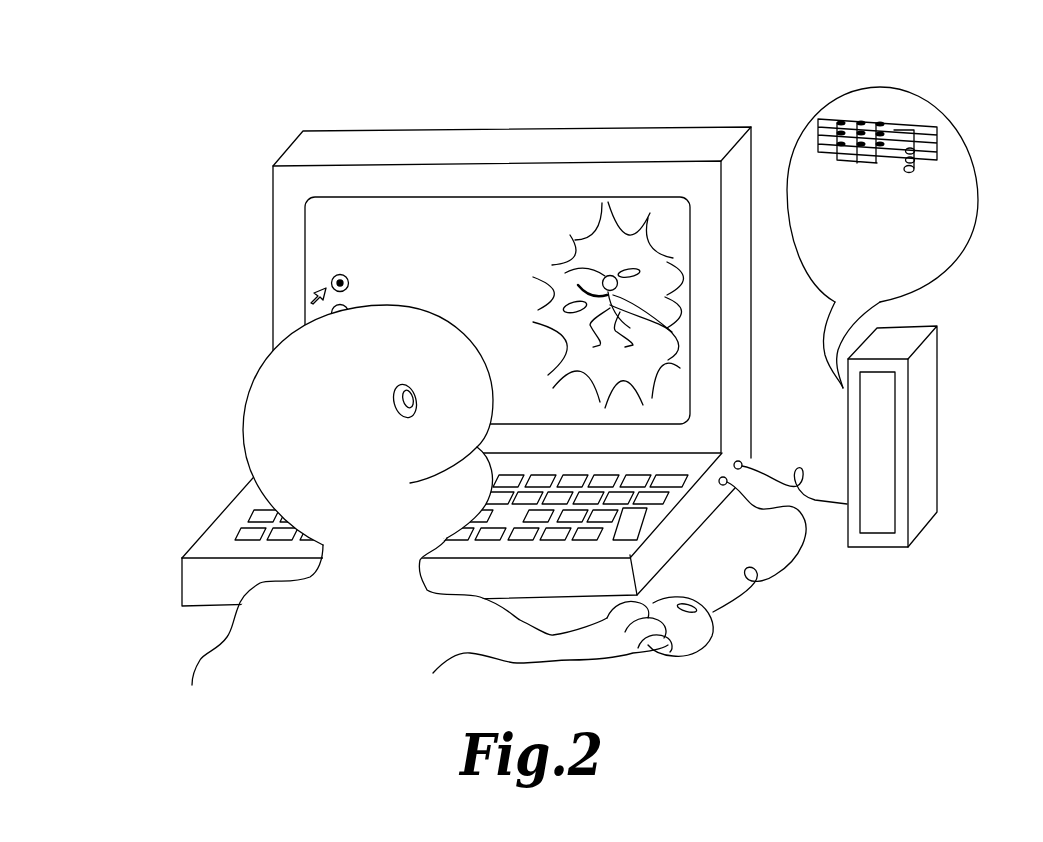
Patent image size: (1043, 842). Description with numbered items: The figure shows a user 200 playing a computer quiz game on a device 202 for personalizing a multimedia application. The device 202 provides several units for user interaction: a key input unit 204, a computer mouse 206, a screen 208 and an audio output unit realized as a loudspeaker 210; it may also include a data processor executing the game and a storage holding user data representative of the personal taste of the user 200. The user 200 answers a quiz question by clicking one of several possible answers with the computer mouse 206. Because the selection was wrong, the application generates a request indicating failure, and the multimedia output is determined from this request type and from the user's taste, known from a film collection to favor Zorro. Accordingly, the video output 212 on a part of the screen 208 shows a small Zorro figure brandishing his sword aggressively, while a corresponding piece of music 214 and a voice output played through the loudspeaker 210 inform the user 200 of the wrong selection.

The user 200 is at (243, 418).
The device 202 is at (287, 151).
The key input unit 204 is at (240, 538).
The computer mouse 206 is at (697, 634).
The screen 208 is at (305, 254).
The loudspeaker 210 is at (878, 548).
The video output 212 is at (625, 233).
The piece of music 214 is at (960, 134).